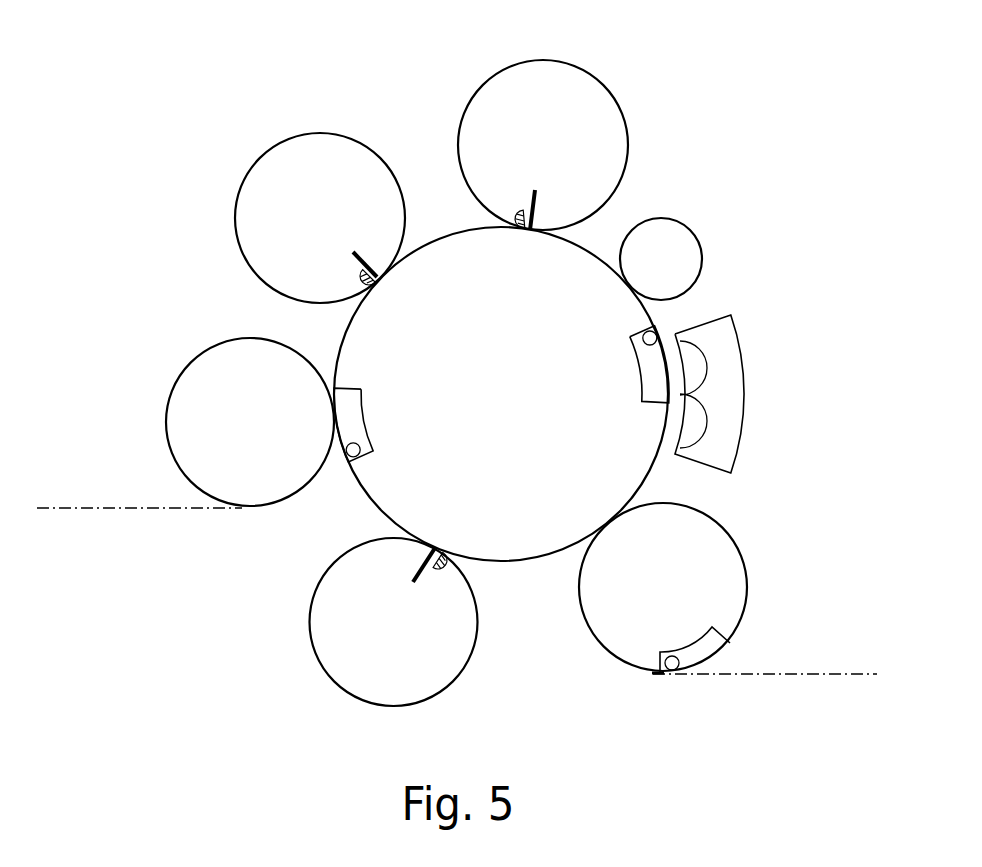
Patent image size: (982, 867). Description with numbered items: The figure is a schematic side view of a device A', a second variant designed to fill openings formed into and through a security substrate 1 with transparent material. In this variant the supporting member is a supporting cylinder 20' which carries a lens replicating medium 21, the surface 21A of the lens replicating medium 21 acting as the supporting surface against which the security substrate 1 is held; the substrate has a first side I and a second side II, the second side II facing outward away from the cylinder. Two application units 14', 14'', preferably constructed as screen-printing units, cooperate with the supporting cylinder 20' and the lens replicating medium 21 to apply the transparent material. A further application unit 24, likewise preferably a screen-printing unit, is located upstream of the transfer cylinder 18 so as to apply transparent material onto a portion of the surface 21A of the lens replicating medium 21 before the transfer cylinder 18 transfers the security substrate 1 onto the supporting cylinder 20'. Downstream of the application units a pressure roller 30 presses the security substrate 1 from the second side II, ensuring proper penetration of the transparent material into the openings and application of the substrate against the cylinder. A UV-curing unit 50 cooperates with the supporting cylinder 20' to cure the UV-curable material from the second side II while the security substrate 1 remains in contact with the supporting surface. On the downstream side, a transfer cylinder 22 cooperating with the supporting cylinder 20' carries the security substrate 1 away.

The supporting cylinder 20' is at (501, 394).
The application unit 14' is at (322, 208).
The application unit 14'' is at (545, 134).
The pressure roller 30 is at (680, 243).
The UV-curing unit 50 is at (726, 392).
The lens replicating medium 21 is at (344, 333).
The surface of the lens replicating medium 21A is at (367, 500).
The transfer cylinder 18 is at (224, 352).
The application unit 24 is at (327, 629).
The transfer cylinder 22 is at (740, 602).
The security substrate 1 is at (72, 509).
The second side II is at (113, 505).
The first side I is at (137, 515).
The device A' is at (379, 52).